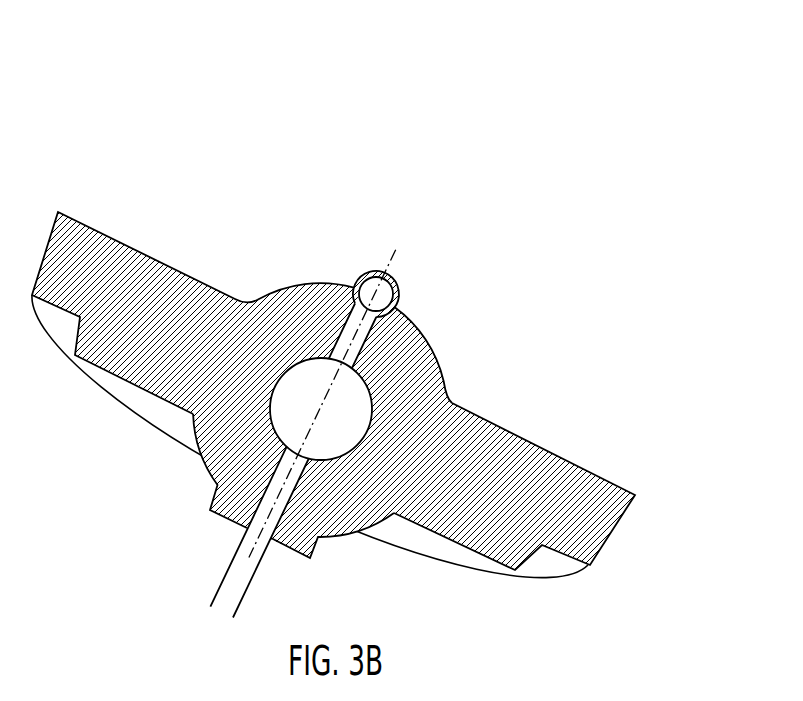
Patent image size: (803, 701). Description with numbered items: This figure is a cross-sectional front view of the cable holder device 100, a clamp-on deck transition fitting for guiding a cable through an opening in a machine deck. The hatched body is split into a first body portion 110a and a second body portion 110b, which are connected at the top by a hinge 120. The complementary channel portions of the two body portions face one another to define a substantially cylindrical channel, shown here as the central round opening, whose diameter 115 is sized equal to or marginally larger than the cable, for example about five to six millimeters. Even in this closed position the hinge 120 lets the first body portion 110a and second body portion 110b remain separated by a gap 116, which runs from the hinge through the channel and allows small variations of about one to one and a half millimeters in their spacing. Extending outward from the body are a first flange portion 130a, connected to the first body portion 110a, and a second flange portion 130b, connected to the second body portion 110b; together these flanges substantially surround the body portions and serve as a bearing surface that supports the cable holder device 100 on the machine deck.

The cable holder device 100 is at (561, 127).
The first body portion 110a is at (427, 340).
The second body portion 110b is at (322, 282).
The diameter 115 is at (272, 423).
The gap 116 is at (281, 625).
The hinge 120 is at (385, 272).
The first flange portion 130a is at (610, 481).
The second flange portion 130b is at (128, 247).